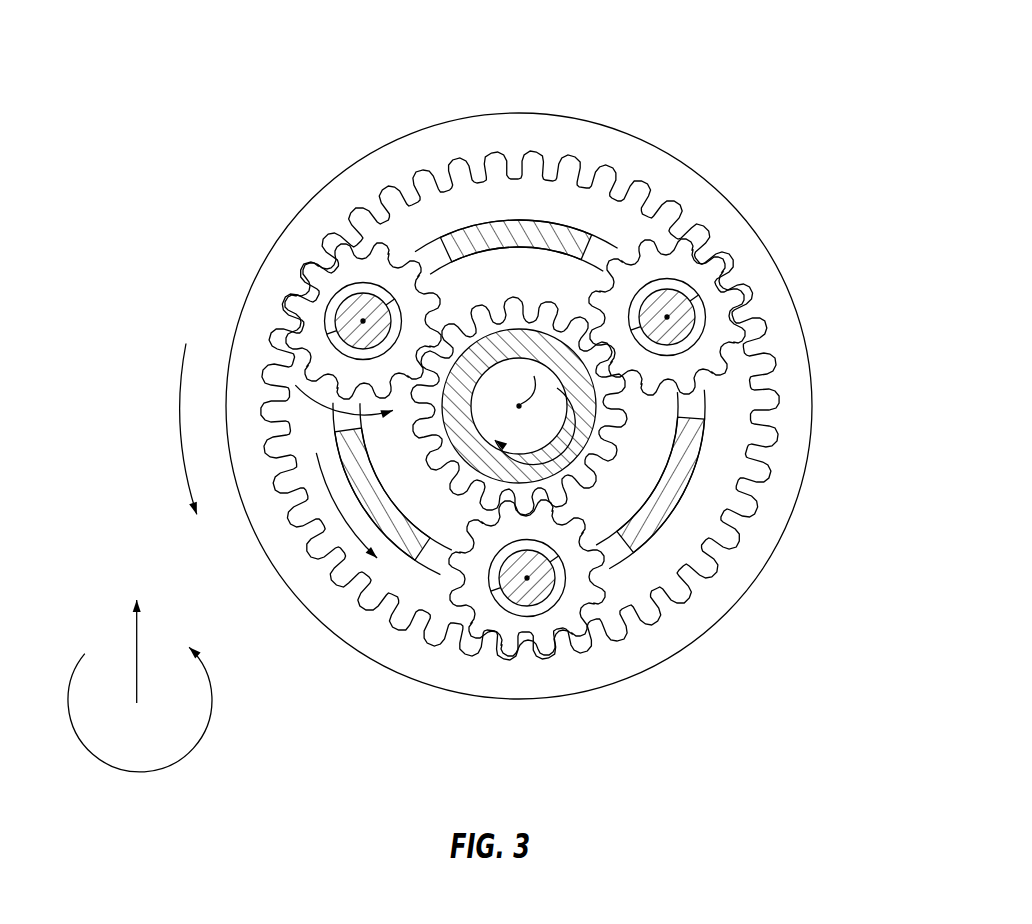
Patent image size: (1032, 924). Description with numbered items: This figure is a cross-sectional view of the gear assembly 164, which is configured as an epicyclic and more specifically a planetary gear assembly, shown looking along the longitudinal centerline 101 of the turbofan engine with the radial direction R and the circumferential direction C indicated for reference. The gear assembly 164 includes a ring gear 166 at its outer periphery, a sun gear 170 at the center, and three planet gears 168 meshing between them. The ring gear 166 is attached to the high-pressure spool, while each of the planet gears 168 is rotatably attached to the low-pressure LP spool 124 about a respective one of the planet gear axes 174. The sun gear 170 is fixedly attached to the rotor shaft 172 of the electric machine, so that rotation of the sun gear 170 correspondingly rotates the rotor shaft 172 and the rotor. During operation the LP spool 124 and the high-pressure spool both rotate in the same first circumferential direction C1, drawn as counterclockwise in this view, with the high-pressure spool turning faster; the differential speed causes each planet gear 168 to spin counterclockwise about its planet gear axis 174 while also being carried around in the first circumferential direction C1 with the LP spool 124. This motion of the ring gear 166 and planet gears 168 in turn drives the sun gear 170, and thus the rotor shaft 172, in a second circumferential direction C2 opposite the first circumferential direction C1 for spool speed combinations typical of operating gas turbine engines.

The gear assembly 164 is at (862, 110).
The ring gear 166 is at (585, 140).
The planet gears 168 is at (377, 257).
The sun gear 170 is at (608, 453).
The rotor shaft 172 is at (546, 345).
The planet gear axes 174 is at (667, 317).
The LP spool 124 is at (495, 225).
The longitudinal centerline 101 is at (530, 413).
The first circumferential direction C1 is at (176, 418).
The second circumferential direction C2 is at (554, 456).
The radial direction R is at (147, 648).
The circumferential direction C is at (142, 700).